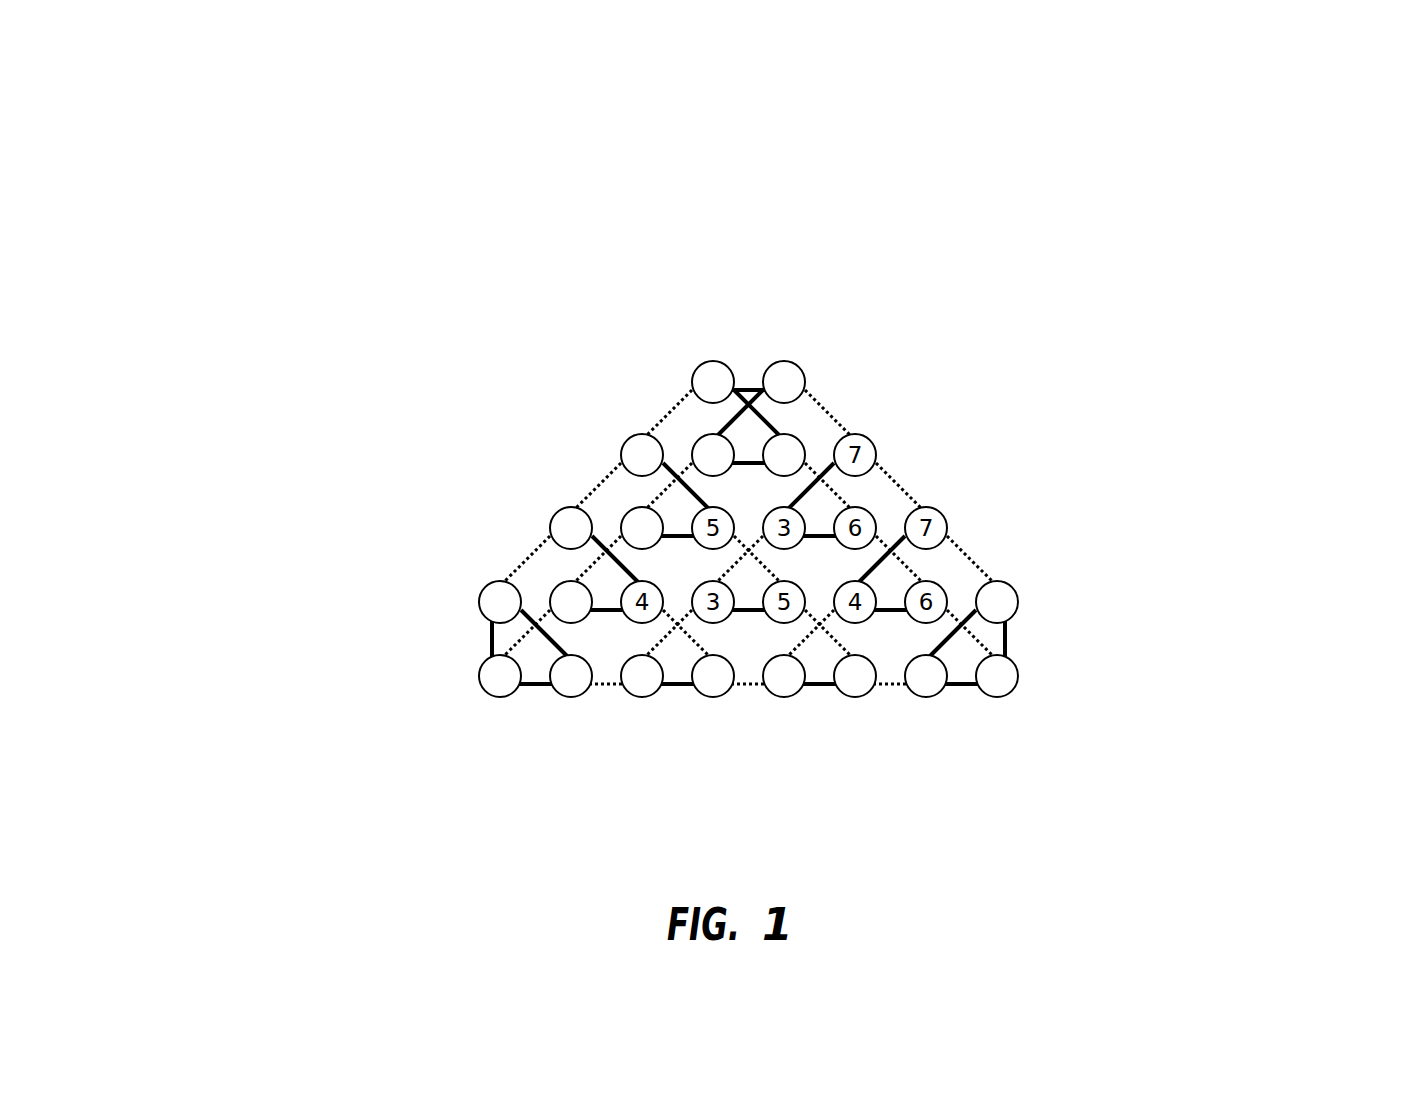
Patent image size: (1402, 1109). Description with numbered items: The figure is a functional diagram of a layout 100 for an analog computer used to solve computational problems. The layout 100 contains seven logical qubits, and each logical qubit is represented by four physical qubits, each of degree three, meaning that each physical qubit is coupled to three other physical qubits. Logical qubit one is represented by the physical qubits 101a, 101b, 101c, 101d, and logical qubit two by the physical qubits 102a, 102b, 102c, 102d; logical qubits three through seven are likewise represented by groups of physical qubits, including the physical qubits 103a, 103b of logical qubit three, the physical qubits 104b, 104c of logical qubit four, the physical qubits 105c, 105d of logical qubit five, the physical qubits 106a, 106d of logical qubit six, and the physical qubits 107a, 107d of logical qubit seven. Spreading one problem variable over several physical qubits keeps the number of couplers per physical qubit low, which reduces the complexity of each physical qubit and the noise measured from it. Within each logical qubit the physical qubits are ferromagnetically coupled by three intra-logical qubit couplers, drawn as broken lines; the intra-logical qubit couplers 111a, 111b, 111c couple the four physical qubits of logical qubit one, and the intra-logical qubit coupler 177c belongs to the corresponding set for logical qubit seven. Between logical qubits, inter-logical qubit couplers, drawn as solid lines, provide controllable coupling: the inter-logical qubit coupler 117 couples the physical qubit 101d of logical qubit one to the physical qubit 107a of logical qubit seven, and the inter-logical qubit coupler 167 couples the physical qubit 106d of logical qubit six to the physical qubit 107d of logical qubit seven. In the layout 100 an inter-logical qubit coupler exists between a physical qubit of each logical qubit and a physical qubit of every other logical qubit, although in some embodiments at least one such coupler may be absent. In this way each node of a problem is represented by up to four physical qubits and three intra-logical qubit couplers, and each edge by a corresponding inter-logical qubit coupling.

The layout 100 is at (770, 236).
The inter-logical qubit coupler 117 is at (752, 386).
The physical qubit 101a is at (490, 580).
The physical qubit 101b is at (560, 510).
The physical qubit 101c is at (633, 435).
The physical qubit 101d is at (703, 363).
The physical qubit 102a is at (478, 662).
The physical qubit 102b is at (563, 580).
The physical qubit 102c is at (637, 507).
The physical qubit 102d is at (703, 433).
The physical qubit 103a is at (565, 697).
The physical qubit 103b is at (635, 697).
The physical qubit 104b is at (703, 698).
The physical qubit 104c is at (790, 697).
The physical qubit 105c is at (863, 697).
The physical qubit 105d is at (933, 697).
The physical qubit 106a is at (792, 433).
The physical qubit 106d is at (1005, 697).
The physical qubit 107a is at (795, 358).
The physical qubit 107d is at (1006, 581).
The intra-logical qubit coupler 111a is at (547, 537).
The intra-logical qubit coupler 111b is at (612, 463).
The intra-logical qubit coupler 111c is at (655, 424).
The intra-logical qubit coupler 177c is at (979, 567).
The inter-logical qubit coupler 167 is at (1012, 622).